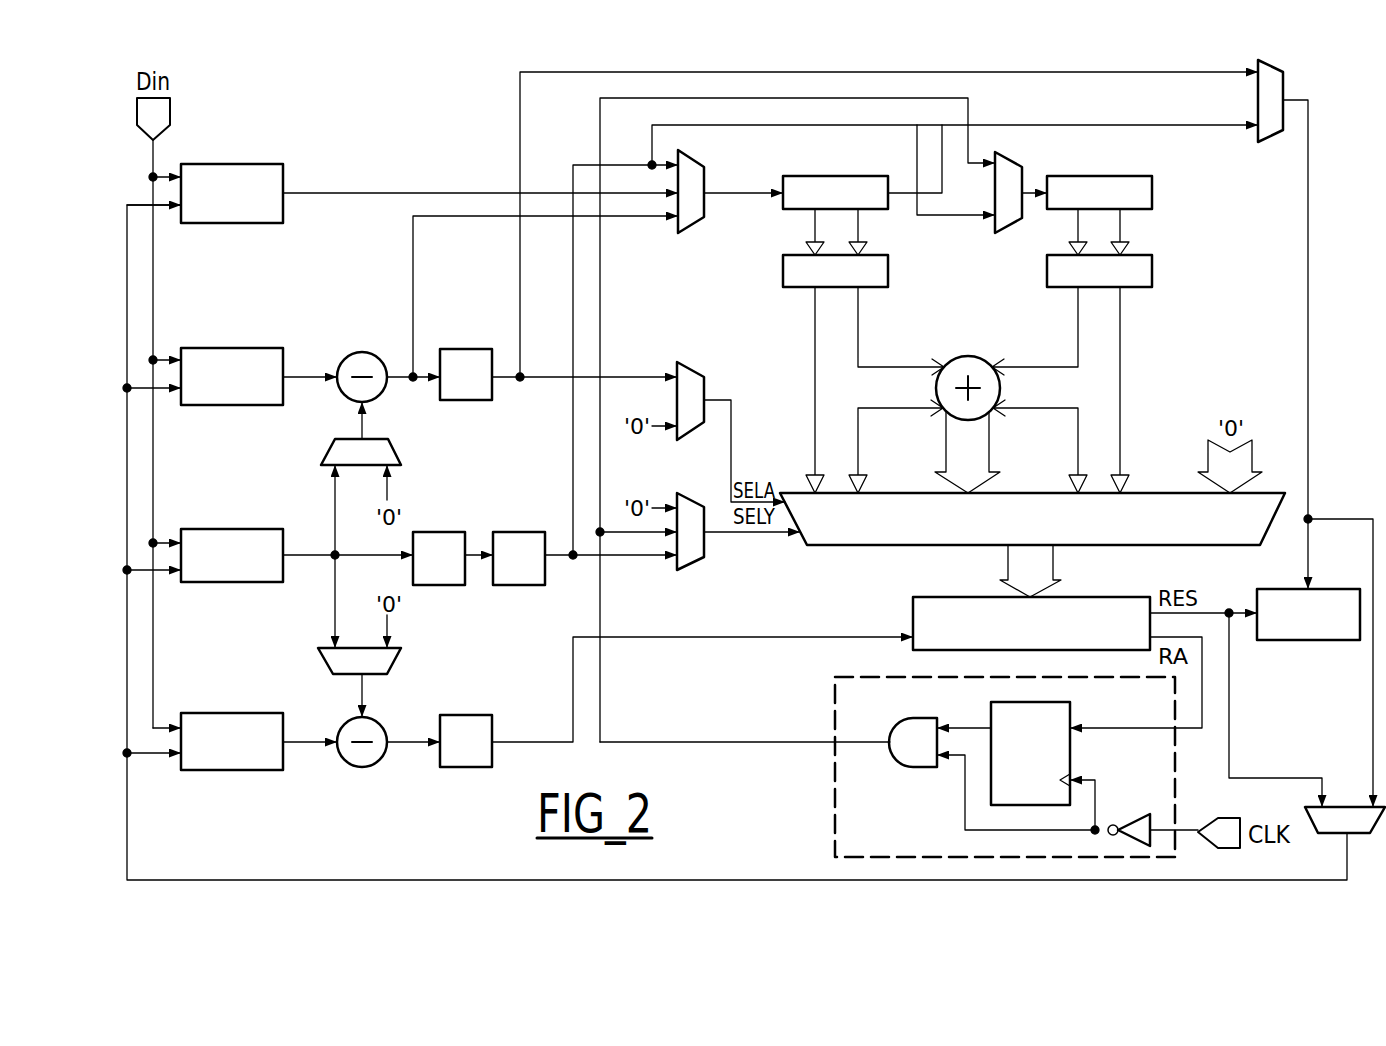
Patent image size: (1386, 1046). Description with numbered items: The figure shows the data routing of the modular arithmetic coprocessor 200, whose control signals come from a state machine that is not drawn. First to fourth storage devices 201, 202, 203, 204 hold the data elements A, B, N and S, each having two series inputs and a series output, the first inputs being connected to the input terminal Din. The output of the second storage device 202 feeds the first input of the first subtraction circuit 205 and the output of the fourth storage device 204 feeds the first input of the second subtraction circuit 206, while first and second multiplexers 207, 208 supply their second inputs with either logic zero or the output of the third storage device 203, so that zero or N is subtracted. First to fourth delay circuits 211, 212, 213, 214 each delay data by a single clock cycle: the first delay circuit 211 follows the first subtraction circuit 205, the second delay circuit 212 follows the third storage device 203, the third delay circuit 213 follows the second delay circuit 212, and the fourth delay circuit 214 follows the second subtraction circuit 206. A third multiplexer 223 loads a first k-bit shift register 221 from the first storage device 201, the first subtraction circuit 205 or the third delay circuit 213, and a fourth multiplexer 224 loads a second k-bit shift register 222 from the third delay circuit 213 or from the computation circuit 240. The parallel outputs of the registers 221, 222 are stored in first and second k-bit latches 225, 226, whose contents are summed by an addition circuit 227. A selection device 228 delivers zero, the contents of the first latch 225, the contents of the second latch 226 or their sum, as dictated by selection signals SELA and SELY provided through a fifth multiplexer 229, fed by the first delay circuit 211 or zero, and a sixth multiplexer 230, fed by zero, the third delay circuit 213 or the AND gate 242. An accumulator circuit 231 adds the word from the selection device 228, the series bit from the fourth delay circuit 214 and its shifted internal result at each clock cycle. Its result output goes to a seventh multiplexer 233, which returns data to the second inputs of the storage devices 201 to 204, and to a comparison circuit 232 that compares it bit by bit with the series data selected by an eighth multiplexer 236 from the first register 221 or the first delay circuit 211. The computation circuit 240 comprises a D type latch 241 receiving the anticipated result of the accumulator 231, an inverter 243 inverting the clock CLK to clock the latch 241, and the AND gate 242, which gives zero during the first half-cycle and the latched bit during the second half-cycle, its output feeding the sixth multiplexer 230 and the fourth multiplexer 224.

The modular arithmetic coprocessor 200 is at (428, 133).
The first storage device 201 is at (232, 164).
The second storage device 202 is at (232, 348).
The third storage device 203 is at (218, 529).
The fourth storage device 204 is at (220, 713).
The first subtraction circuit 205 is at (362, 352).
The second subtraction circuit 206 is at (362, 767).
The first multiplexer 207 is at (328, 452).
The second multiplexer 208 is at (395, 660).
The first delay circuit 211 is at (468, 400).
The second delay circuit 212 is at (438, 532).
The third delay circuit 213 is at (515, 532).
The fourth delay circuit 214 is at (468, 715).
The first k-bit shift register 221 is at (818, 176).
The second k-bit shift register 222 is at (1152, 193).
The third multiplexer 223 is at (692, 233).
The fourth multiplexer 224 is at (1008, 233).
The first k-bit latch 225 is at (888, 270).
The second k-bit latch 226 is at (1152, 270).
The addition circuit 227 is at (968, 356).
The selection device 228 is at (847, 545).
The fifth multiplexer 229 is at (690, 362).
The sixth multiplexer 230 is at (690, 570).
The accumulator circuit 231 is at (922, 597).
The comparison circuit 232 is at (1310, 640).
The seventh multiplexer 233 is at (1343, 807).
The eighth multiplexer 236 is at (1275, 142).
The computation circuit 240 is at (835, 770).
The latch 241 is at (1070, 705).
The AND gate 242 is at (920, 767).
The inverter 243 is at (1135, 814).